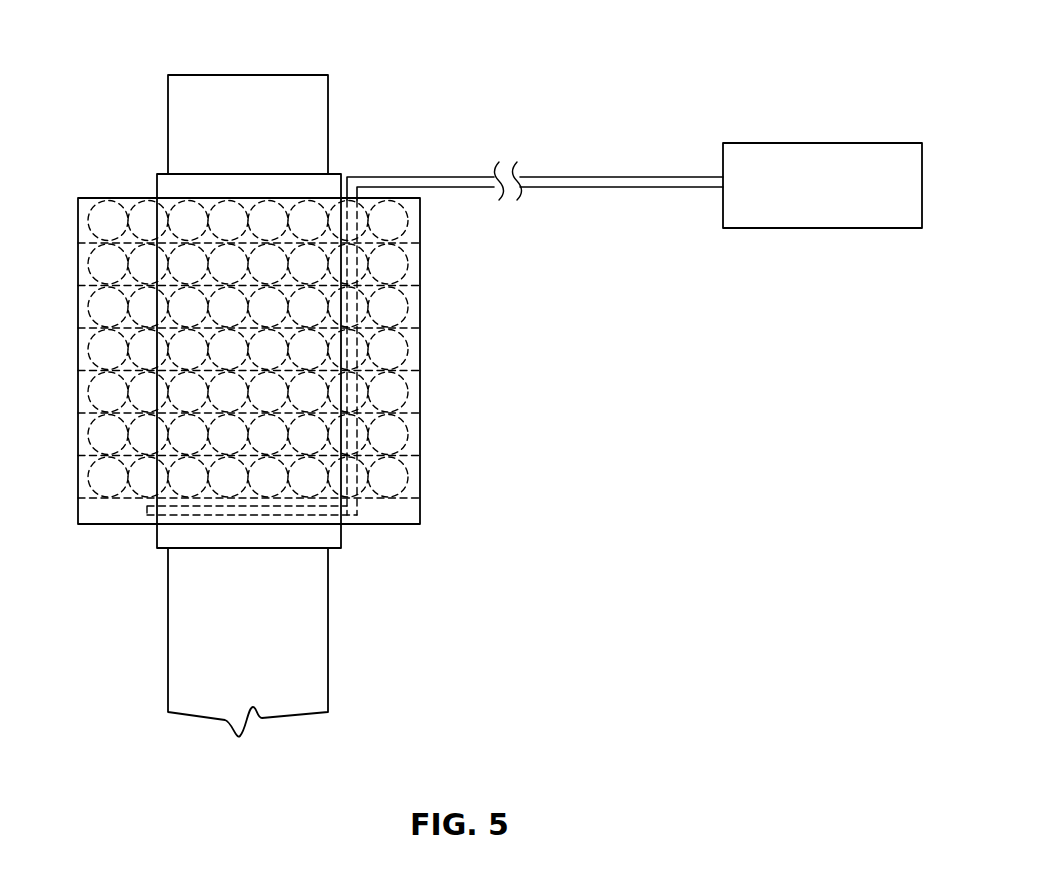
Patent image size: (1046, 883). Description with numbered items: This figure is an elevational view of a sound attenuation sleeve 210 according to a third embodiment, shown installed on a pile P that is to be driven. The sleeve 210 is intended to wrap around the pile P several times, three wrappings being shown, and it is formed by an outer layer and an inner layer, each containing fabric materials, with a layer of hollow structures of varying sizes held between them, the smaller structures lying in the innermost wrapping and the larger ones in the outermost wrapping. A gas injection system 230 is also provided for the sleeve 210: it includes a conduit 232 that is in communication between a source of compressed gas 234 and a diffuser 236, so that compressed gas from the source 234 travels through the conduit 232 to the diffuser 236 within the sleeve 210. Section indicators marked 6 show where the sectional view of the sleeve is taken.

The pile P is at (293, 75).
The sound attenuation sleeve 210 is at (432, 417).
The gas injection system 230 is at (550, 177).
The conduit 232 is at (372, 255).
The source of compressed gas 234 is at (778, 142).
The diffuser 236 is at (277, 517).
The section line 6- 6 is at (78, 290).